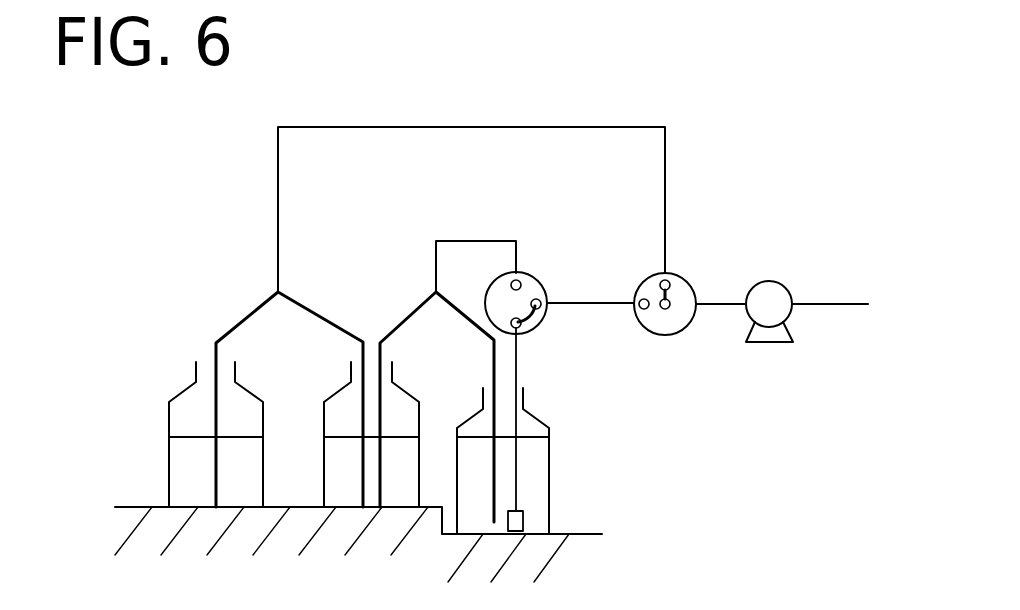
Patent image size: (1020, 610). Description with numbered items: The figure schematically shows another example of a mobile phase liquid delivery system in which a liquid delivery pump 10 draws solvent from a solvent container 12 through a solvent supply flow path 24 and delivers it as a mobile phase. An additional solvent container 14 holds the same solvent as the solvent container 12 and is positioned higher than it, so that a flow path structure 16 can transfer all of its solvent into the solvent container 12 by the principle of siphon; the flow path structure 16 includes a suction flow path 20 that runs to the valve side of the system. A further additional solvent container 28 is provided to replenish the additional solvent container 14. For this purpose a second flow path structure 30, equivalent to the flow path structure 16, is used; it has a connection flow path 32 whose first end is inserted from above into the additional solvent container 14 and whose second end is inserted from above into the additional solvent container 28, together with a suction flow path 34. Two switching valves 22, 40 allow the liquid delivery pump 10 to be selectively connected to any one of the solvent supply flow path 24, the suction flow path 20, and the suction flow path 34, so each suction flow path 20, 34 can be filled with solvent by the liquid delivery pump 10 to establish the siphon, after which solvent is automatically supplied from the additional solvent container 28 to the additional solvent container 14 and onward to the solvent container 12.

The liquid delivery pump 10 is at (769, 281).
The solvent container 12 is at (549, 485).
The additional solvent container 14 is at (335, 392).
The flow path structure 16 is at (428, 290).
The suction flow path 20 is at (477, 240).
The switching valve 22 is at (535, 277).
The solvent supply flow path 24 is at (517, 365).
The additional solvent container 28 is at (182, 392).
The flow path structure 30 is at (404, 317).
The connection flow path 32 is at (251, 312).
The suction flow path 34 is at (277, 213).
The switching valve 40 is at (688, 277).